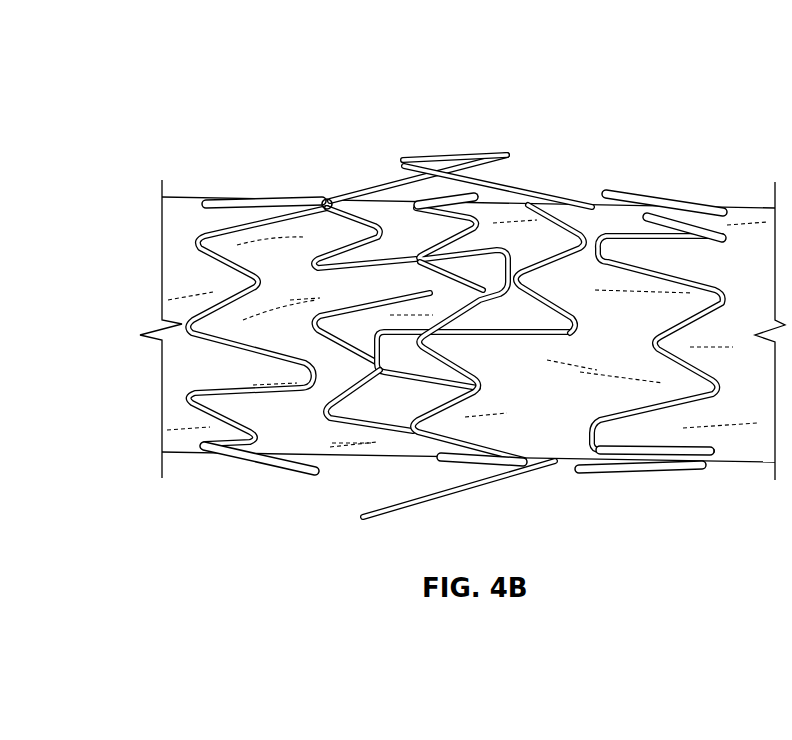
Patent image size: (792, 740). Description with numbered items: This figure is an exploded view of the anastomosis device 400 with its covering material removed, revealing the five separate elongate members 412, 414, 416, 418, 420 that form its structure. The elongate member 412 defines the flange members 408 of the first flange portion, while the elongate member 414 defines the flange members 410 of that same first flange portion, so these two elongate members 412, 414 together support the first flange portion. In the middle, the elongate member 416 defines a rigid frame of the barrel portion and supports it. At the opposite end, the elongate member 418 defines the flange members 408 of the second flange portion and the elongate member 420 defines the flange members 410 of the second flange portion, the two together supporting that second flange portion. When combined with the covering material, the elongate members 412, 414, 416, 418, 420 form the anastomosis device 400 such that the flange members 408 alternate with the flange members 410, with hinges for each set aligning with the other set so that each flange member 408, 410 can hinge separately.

The anastomosis device 400 is at (240, 128).
The flange members 408 is at (403, 152).
The flange members 410 is at (294, 194).
The elongate member 412 is at (357, 428).
The elongate member 414 is at (223, 457).
The elongate member 416 is at (447, 410).
The elongate member 418 is at (540, 413).
The elongate member 420 is at (620, 470).